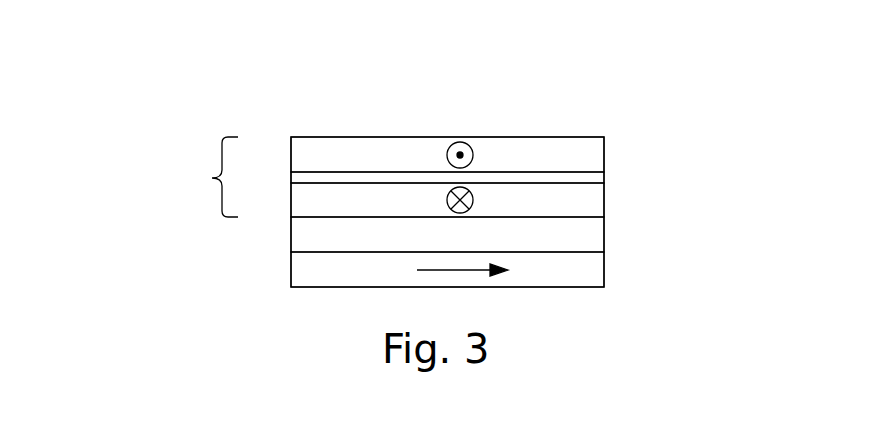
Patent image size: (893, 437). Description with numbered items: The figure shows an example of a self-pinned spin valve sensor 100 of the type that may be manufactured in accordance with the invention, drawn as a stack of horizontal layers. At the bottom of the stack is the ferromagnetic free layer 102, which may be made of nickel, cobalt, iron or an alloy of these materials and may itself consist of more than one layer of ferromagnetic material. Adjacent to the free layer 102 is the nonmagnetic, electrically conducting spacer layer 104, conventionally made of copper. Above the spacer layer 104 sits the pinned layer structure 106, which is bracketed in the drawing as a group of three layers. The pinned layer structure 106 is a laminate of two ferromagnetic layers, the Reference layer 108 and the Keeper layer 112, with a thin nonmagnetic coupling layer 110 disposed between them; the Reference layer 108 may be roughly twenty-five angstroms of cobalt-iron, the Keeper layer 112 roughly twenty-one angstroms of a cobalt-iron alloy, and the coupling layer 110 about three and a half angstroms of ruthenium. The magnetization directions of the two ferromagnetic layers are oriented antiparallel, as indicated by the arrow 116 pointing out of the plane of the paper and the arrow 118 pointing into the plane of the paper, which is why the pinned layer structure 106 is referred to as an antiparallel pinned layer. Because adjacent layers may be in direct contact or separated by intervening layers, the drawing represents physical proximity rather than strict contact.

The self-pinned spin valve sensor 100 is at (187, 60).
The ferromagnetic free layer 102 is at (604, 267).
The spacer layer 104 is at (604, 235).
The pinned layer structure 106 is at (188, 177).
The Reference layer 108 is at (604, 201).
The coupling layer 110 is at (604, 178).
The Keeper layer 112 is at (604, 148).
The arrow 116 is at (448, 146).
The arrow 118 is at (447, 199).